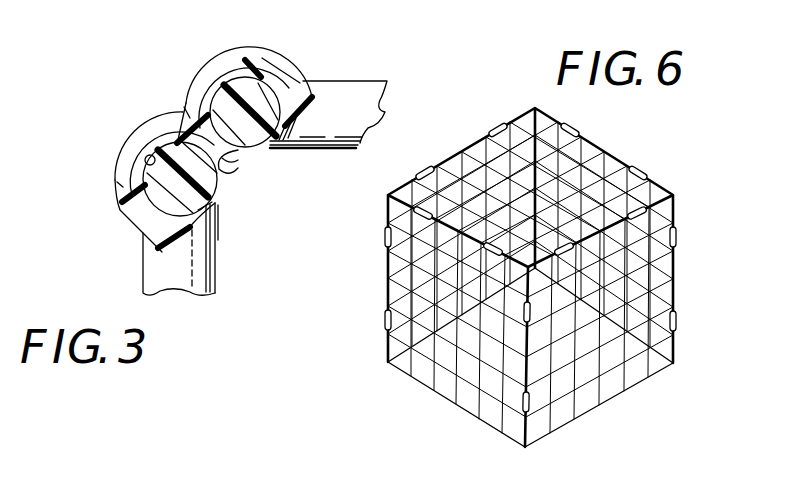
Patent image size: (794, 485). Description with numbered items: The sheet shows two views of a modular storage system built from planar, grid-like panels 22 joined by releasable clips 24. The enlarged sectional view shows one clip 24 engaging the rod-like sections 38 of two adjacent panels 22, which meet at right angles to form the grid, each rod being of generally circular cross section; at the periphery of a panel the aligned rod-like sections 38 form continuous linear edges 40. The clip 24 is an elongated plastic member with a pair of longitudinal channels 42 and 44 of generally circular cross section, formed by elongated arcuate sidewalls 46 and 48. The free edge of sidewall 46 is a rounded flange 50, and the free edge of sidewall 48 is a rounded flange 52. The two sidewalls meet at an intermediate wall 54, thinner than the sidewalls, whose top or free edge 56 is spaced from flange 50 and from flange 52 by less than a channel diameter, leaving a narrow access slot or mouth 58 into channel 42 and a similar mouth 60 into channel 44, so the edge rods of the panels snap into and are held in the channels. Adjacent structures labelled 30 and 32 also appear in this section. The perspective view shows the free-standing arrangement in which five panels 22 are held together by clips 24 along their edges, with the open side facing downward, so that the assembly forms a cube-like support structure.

In FIG. 6, the modular panel 22 is at (628, 212).
In FIG. 3, the clip 24 is at (158, 104).
In FIG. 6, the clip 24 is at (580, 124).
In FIG. 3, the tubular member 30 is at (142, 275).
In FIG. 3, the plate member 32 is at (351, 78).
In FIG. 3, the rod-like section 38 is at (368, 112).
In FIG. 3, the linear edge 40 is at (245, 142).
In FIG. 3, the channel 42 is at (146, 159).
In FIG. 3, the channel 44 is at (239, 77).
In FIG. 3, the arcuate sidewall 46 is at (122, 187).
In FIG. 3, the arcuate sidewall 48 is at (283, 77).
In FIG. 3, the rounded flange 50 is at (209, 217).
In FIG. 3, the rounded flange 52 is at (290, 136).
In FIG. 3, the intermediate wall 54 is at (185, 107).
In FIG. 3, the free edge 56 is at (229, 164).
In FIG. 3, the access slot 58 is at (219, 222).
In FIG. 3, the access slot 60 is at (291, 120).